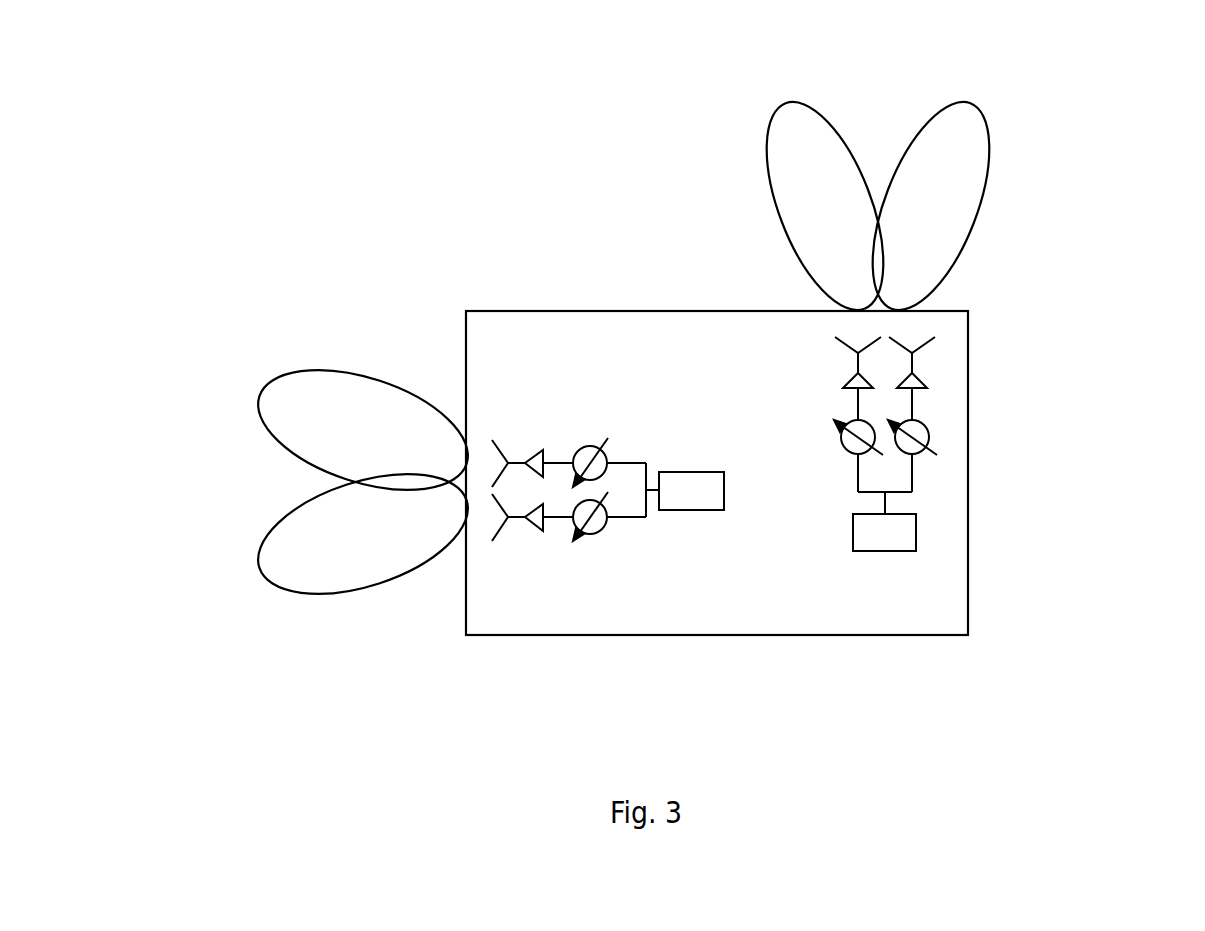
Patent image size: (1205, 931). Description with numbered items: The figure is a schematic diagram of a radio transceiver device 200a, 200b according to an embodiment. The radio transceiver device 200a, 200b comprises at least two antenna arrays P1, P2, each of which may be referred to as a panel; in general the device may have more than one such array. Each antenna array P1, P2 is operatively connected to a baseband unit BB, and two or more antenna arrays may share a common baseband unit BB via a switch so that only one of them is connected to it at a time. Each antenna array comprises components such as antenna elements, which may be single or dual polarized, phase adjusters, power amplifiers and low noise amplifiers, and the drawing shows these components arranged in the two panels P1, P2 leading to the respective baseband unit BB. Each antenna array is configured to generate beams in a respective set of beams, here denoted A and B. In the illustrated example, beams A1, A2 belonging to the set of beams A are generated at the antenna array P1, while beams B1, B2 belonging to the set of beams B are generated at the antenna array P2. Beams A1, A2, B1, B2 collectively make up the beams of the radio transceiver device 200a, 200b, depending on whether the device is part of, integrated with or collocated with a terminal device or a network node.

The radio transceiver device 200a is at (557, 354).
The radio transceiver device 200b is at (553, 386).
The set of beams A is at (247, 363).
The beam A1 is at (362, 391).
The beam A2 is at (362, 572).
The set of beams B is at (995, 95).
The beam B1 is at (742, 206).
The beam B2 is at (1021, 206).
The antenna array P1 is at (650, 535).
The antenna array P2 is at (820, 337).
The baseband unit BB is at (787, 511).